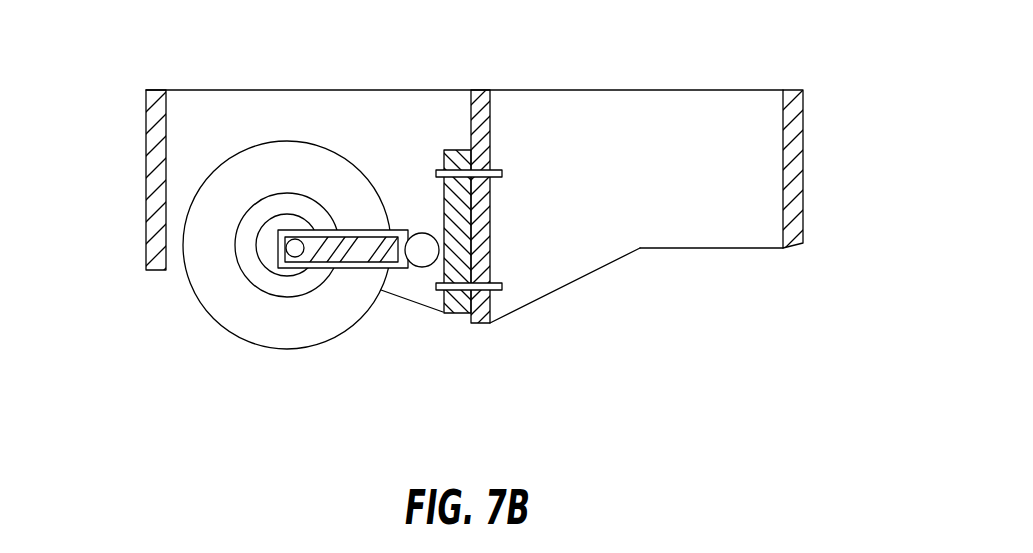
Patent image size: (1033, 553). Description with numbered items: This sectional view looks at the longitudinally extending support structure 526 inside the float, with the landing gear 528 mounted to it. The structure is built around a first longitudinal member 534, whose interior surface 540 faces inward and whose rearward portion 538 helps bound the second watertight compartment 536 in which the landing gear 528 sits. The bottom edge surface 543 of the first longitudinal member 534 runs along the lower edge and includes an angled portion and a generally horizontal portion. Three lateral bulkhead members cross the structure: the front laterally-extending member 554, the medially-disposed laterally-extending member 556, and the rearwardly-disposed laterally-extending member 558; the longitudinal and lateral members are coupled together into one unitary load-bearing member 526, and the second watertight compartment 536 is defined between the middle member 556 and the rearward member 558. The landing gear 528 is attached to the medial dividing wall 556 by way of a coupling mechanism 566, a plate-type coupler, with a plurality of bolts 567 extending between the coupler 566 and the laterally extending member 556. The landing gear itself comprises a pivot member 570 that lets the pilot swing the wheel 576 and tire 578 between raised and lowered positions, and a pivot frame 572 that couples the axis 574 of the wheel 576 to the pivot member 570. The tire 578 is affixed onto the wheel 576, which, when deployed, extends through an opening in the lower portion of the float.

The longitudinally extending support structure 526 is at (843, 118).
The landing gear 528 is at (223, 358).
The first longitudinal member 534 is at (633, 282).
The second watertight compartment 536 is at (713, 118).
The rearward portion 538 is at (381, 112).
The interior surface 540 is at (657, 178).
The bottom edge surface 543 is at (545, 297).
The first laterally-extending member 554 is at (798, 179).
The second laterally-extending member 556 is at (489, 128).
The third laterally-extending member 558 is at (141, 158).
The coupling mechanism 566 is at (463, 311).
The bolts 567 is at (502, 172).
The pivot member 570 is at (421, 240).
The pivot frame 572 is at (360, 234).
The axis 574 is at (300, 255).
The wheel 576 is at (257, 222).
The tire 578 is at (236, 166).